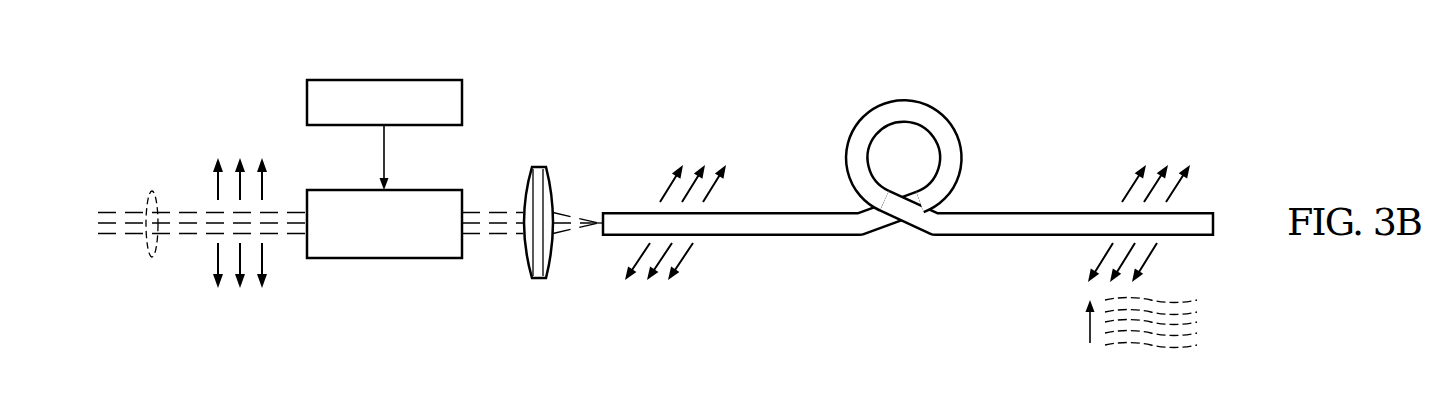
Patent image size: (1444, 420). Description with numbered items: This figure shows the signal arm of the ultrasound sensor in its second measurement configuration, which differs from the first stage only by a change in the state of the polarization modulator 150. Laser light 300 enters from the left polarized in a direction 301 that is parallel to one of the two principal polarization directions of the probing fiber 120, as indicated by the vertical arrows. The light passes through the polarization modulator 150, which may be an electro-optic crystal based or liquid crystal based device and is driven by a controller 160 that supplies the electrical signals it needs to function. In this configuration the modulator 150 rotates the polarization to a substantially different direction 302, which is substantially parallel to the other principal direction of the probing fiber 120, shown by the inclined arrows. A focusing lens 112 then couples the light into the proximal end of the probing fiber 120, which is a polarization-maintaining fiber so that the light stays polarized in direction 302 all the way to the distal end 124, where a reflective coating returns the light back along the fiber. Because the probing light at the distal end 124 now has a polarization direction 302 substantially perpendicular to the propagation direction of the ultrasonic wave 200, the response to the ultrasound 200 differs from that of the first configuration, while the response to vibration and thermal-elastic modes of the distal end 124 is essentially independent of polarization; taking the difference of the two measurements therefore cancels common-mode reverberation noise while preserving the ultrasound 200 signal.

The laser light 300 is at (152, 193).
The polarization direction 301 is at (208, 138).
The controller 160 is at (340, 80).
The polarization modulator 150 is at (340, 190).
The focusing lens 112 is at (540, 167).
The distal end 124 is at (1232, 192).
The probing fiber 120 is at (902, 108).
The polarization direction 302 is at (716, 137).
The ultrasonic wave 200 is at (1222, 325).